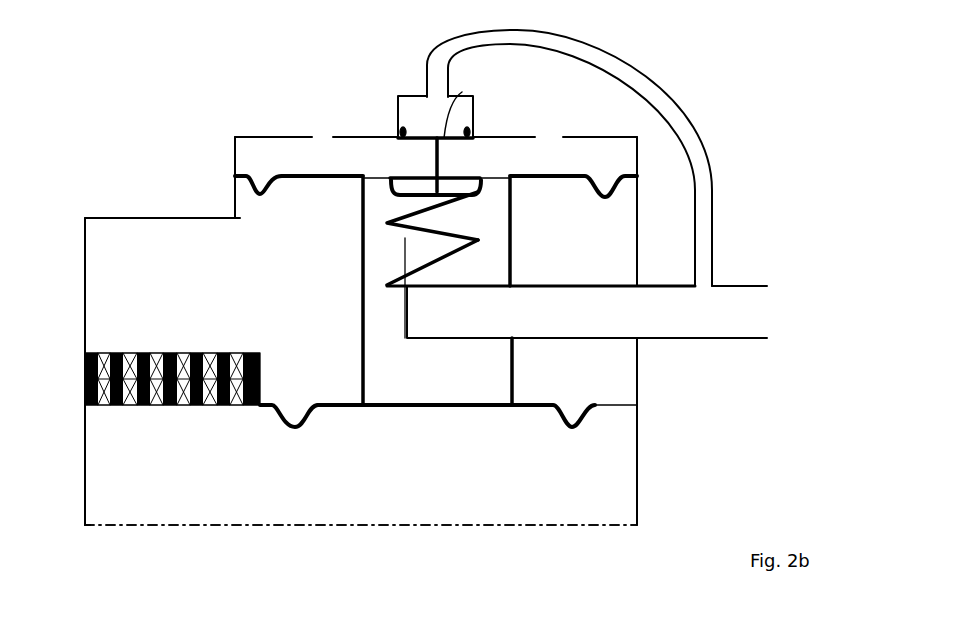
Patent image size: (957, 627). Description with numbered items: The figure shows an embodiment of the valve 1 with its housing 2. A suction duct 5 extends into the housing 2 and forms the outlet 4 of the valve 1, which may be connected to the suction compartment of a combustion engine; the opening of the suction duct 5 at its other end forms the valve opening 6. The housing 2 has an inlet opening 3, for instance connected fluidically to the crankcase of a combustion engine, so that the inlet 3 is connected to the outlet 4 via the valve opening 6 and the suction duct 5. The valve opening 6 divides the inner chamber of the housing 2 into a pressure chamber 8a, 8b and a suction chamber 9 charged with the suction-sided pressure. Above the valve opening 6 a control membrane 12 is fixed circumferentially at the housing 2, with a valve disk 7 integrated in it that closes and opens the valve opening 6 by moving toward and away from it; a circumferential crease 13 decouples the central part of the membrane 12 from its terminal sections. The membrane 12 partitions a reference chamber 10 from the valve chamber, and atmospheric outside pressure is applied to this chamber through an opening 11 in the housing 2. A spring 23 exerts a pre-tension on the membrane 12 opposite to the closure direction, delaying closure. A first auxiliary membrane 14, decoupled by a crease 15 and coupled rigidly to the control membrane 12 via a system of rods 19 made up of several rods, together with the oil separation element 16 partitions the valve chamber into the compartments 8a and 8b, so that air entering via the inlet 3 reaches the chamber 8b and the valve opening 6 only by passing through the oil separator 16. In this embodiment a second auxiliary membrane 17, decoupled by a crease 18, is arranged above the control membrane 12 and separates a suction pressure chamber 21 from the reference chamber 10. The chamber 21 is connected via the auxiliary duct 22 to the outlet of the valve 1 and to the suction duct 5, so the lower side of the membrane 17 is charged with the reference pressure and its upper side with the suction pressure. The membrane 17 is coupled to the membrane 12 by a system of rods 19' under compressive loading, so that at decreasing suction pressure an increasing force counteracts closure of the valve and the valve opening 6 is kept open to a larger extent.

The valve 1 is at (683, 440).
The housing 2 is at (85, 293).
The inlet opening 3 is at (330, 525).
The outlet 4 is at (755, 315).
The suction duct 5 is at (582, 320).
The valve opening 6 is at (420, 245).
The valve disk 7 is at (458, 197).
The pressure chamber compartment 8a is at (136, 478).
The pressure chamber compartment 8b is at (200, 256).
The suction chamber 9 is at (640, 322).
The reference chamber 10 is at (593, 132).
The opening 11 is at (328, 122).
The control membrane 12 is at (320, 180).
The crease 13 is at (260, 197).
The first auxiliary membrane 14 is at (483, 410).
The crease 15 is at (280, 412).
The oil separation element 16 is at (85, 437).
The second auxiliary membrane 17 is at (462, 92).
The crease 18 is at (399, 128).
The system of rods 19 is at (436, 291).
The system of rods 19' is at (410, 165).
The suction pressure chamber 21 is at (406, 96).
The auxiliary duct 22 is at (622, 72).
The spring 23 is at (465, 240).